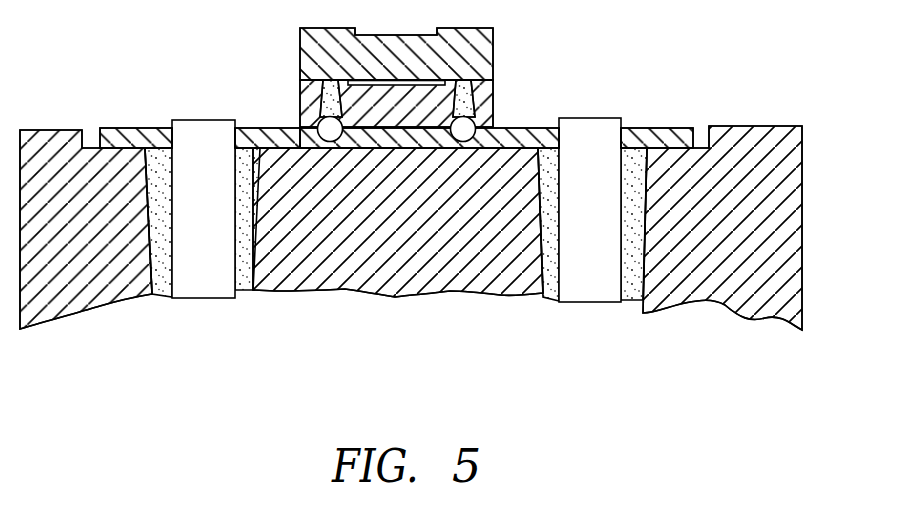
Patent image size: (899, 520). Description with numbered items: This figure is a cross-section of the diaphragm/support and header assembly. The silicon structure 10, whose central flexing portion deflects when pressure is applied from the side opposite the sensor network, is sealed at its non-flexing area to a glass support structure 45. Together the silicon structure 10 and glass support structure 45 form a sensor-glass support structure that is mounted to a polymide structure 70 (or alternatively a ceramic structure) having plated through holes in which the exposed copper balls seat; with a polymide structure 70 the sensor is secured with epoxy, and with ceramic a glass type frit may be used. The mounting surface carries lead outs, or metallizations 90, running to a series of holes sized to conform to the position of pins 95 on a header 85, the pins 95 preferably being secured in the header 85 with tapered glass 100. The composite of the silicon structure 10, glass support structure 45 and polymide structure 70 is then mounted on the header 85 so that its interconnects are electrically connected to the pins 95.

The silicon structure 10 is at (495, 64).
The glass support structure 45 is at (495, 110).
The polymide structure 70 is at (639, 126).
The header 85 is at (763, 125).
The metallizations 90 is at (277, 140).
The pins 95 is at (574, 116).
The tapered glass 100 is at (649, 220).